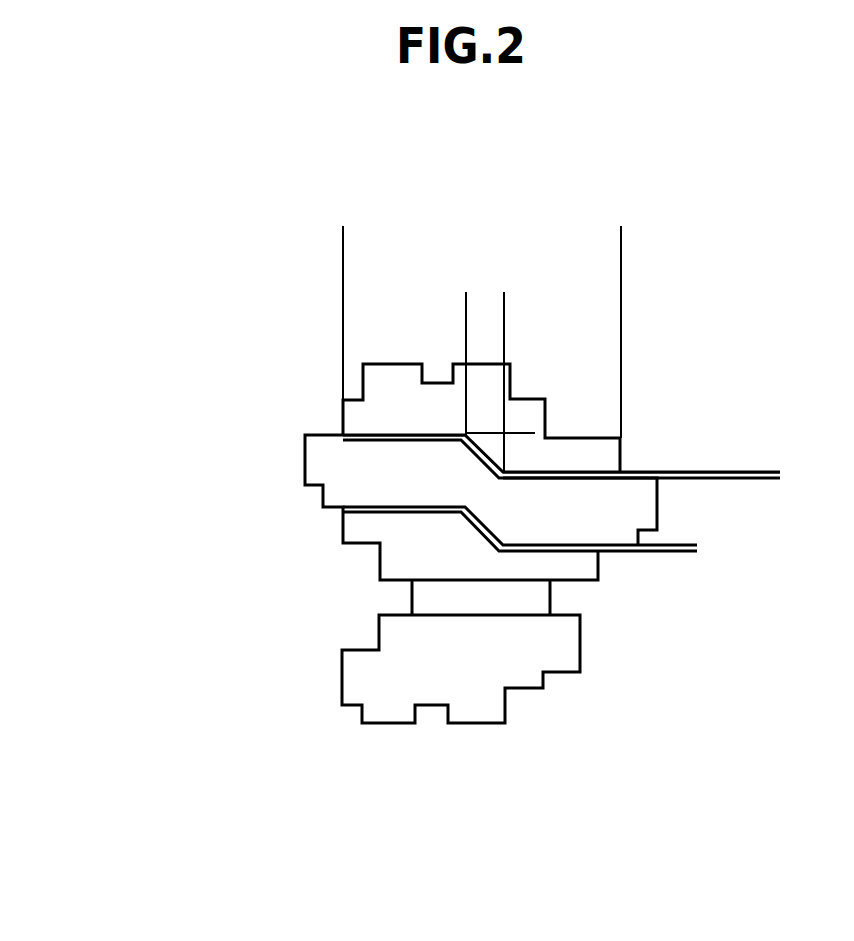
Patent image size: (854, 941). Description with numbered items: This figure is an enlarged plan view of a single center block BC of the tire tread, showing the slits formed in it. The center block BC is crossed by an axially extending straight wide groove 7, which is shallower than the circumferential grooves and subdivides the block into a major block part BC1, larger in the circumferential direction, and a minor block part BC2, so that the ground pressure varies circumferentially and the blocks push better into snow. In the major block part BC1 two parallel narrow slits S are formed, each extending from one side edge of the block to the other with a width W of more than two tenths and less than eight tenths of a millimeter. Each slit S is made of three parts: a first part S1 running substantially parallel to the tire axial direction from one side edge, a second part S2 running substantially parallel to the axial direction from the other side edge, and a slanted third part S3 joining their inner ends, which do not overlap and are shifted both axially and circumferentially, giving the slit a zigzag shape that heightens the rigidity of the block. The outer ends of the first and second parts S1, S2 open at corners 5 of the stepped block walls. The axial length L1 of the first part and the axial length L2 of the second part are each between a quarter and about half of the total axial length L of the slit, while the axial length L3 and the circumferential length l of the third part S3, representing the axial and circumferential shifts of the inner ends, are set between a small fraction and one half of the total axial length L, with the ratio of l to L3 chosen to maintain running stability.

The corners of the stepped walls 5 is at (299, 504).
The straight wide groove 7 is at (407, 595).
The slit S is at (590, 553).
The first part S1 is at (387, 437).
The third part S3 is at (487, 446).
The second part S2 is at (523, 477).
The total axial length of the slit L is at (620, 234).
The axial length of the first part L1 is at (465, 303).
The axial length of the second part L2 is at (620, 303).
The axial length of the third part L3 is at (480, 302).
The circumferential length of the third part l is at (530, 471).
The width of the slits W is at (775, 452).
The center block BC is at (533, 804).
The major block part BC1 is at (613, 617).
The minor block part BC2 is at (546, 705).